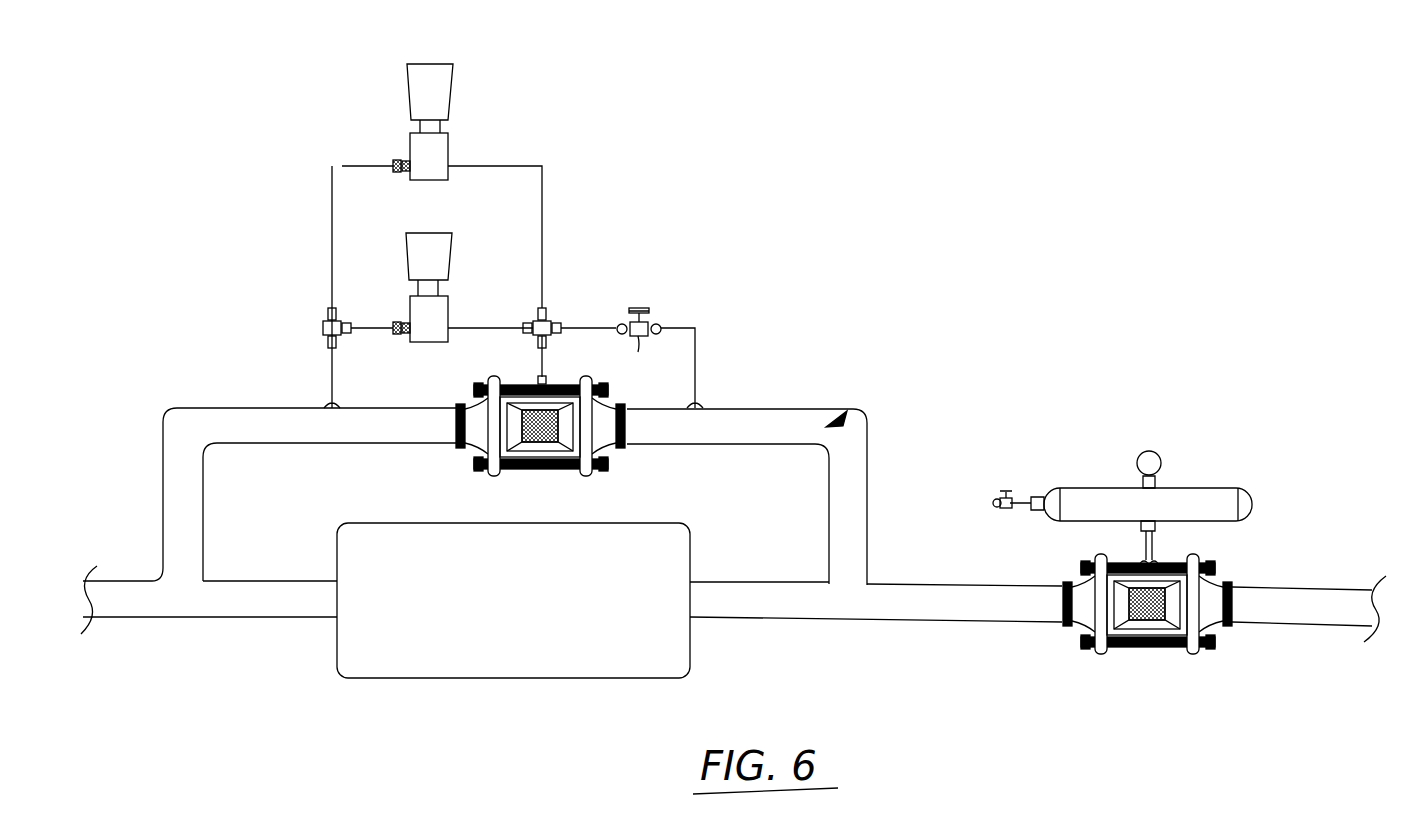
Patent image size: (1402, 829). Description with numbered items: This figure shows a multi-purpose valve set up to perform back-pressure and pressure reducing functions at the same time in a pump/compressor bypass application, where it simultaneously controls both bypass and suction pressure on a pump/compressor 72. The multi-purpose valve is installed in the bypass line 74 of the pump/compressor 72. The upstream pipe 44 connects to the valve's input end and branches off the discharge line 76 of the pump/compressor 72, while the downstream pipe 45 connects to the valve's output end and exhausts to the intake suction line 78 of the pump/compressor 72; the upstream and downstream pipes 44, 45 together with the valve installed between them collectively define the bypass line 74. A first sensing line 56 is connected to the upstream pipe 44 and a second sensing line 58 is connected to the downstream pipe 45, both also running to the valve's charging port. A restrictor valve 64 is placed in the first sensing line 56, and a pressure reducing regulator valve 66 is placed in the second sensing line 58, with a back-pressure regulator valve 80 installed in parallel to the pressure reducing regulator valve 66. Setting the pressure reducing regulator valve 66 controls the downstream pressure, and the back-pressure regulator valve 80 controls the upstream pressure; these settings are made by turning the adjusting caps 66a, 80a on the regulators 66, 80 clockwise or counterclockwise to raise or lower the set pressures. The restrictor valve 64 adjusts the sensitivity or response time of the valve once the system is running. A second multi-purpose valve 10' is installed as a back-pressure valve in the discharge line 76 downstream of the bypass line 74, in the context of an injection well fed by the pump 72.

The second multi-purpose valve 10' is at (1136, 552).
The upstream pipe 44 is at (748, 418).
The downstream pipe 45 is at (242, 418).
The first sensing line 56 is at (700, 341).
The second sensing line 58 is at (328, 377).
The restrictor valve 64 is at (611, 348).
The pressure reducing regulator valve 66 is at (437, 316).
The adjusting cap 66a is at (440, 255).
The pump/compressor 72 is at (546, 611).
The bypass line 74 is at (840, 418).
The discharge line 76 is at (808, 610).
The intake suction line 78 is at (270, 604).
The back-pressure regulator valve 80 is at (438, 160).
The adjusting cap 80a is at (438, 104).